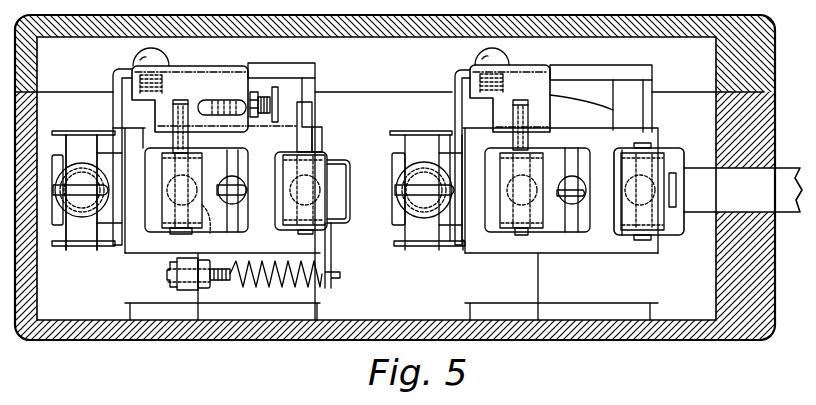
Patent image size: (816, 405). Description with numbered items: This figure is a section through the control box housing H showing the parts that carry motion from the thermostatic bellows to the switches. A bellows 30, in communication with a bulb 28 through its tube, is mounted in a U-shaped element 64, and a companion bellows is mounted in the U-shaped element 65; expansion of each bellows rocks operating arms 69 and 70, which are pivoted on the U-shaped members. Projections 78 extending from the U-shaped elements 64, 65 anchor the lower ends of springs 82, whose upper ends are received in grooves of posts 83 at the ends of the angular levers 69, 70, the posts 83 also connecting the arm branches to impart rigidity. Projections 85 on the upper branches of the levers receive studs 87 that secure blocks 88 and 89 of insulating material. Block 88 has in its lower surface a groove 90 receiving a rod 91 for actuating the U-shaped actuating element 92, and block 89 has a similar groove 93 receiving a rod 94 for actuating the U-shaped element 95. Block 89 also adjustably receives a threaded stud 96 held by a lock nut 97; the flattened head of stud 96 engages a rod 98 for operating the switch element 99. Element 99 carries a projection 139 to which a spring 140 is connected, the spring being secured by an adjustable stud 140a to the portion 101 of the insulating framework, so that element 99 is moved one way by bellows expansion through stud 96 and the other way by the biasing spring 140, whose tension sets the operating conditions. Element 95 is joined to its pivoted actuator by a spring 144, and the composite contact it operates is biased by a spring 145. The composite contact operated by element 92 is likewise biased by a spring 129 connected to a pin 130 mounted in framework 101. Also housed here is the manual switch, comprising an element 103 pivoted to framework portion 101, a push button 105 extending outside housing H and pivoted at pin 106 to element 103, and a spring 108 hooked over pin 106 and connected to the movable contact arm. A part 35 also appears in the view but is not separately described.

The housing H is at (700, 335).
The push button 105 is at (743, 190).
The U-shaped element 65 is at (318, 67).
The projections 85 is at (113, 80).
The studs 87 is at (167, 58).
The block of insulating material 89 is at (233, 78).
The groove 93 is at (192, 101).
The rod 94 is at (172, 126).
The lock nut 97 is at (257, 93).
The stud 96 is at (275, 88).
The rod 98 is at (312, 115).
The portion of the insulating framework 101 is at (322, 140).
The U-shaped element 95 is at (170, 218).
The spring 144 is at (209, 222).
The spring 145 is at (243, 168).
The switch element 99 is at (320, 176).
The projection 139 is at (333, 240).
The spring 140 is at (293, 260).
The adjustable stud 140a is at (167, 276).
The operating arm 70 is at (93, 131).
The bulb 28 is at (78, 126).
The projections 78 is at (58, 157).
The posts 83 is at (77, 232).
The spring 82 is at (100, 215).
The top plate 35 is at (430, 131).
The operating arm 69 is at (397, 131).
The U-shaped element 64 is at (641, 70).
The block of insulating material 88 is at (551, 78).
The bellows 30 is at (578, 102).
The groove 90 is at (523, 116).
The rod 91 is at (530, 114).
The U-shaped actuating element 92 is at (538, 167).
The pin 130 is at (576, 162).
The spring 129 is at (567, 204).
The pin 106 is at (684, 150).
The pivotally mounted element 103 is at (628, 236).
The spring 108 is at (677, 190).